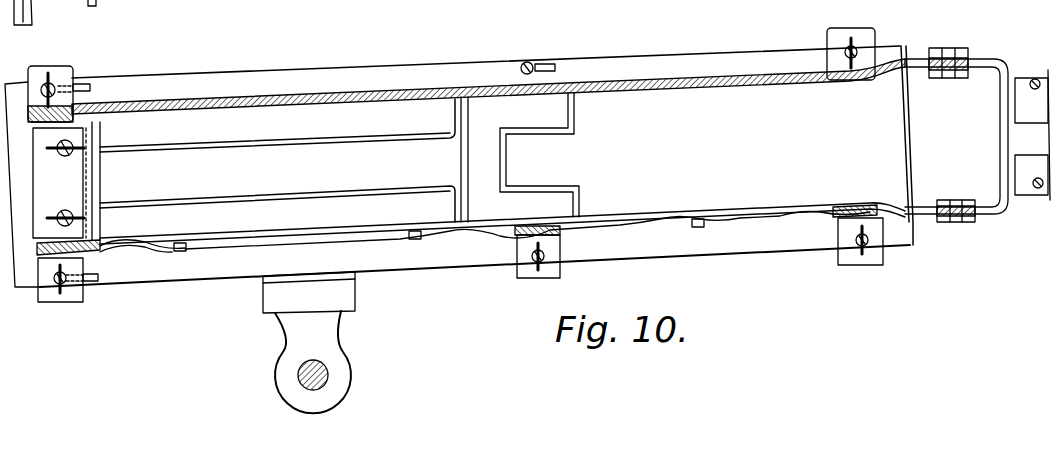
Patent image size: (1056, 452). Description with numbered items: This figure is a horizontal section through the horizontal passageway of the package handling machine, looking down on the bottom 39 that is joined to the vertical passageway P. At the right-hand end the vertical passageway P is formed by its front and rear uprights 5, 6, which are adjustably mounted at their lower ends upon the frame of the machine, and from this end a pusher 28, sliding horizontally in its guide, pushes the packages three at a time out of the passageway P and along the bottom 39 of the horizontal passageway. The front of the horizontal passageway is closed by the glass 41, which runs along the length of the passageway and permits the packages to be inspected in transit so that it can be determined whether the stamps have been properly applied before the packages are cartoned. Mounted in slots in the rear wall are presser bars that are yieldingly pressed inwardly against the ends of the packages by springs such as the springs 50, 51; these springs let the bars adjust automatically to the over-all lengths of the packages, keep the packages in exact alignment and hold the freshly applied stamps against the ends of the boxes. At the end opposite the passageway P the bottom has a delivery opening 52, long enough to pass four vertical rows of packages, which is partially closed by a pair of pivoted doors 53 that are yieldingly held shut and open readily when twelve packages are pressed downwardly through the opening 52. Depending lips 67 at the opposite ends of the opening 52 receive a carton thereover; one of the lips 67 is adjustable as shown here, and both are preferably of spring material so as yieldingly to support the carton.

The glass 41 is at (665, 82).
The bottom 39 is at (687, 145).
The doors 53 is at (316, 121).
The spring 50 is at (596, 224).
The spring 51 is at (812, 226).
The delivery opening 52 is at (120, 250).
The depending lips 67 is at (48, 198).
The pusher 28 is at (1000, 140).
The front upright 5 is at (948, 62).
The rear upright 6 is at (958, 210).
The passageway P is at (995, 135).